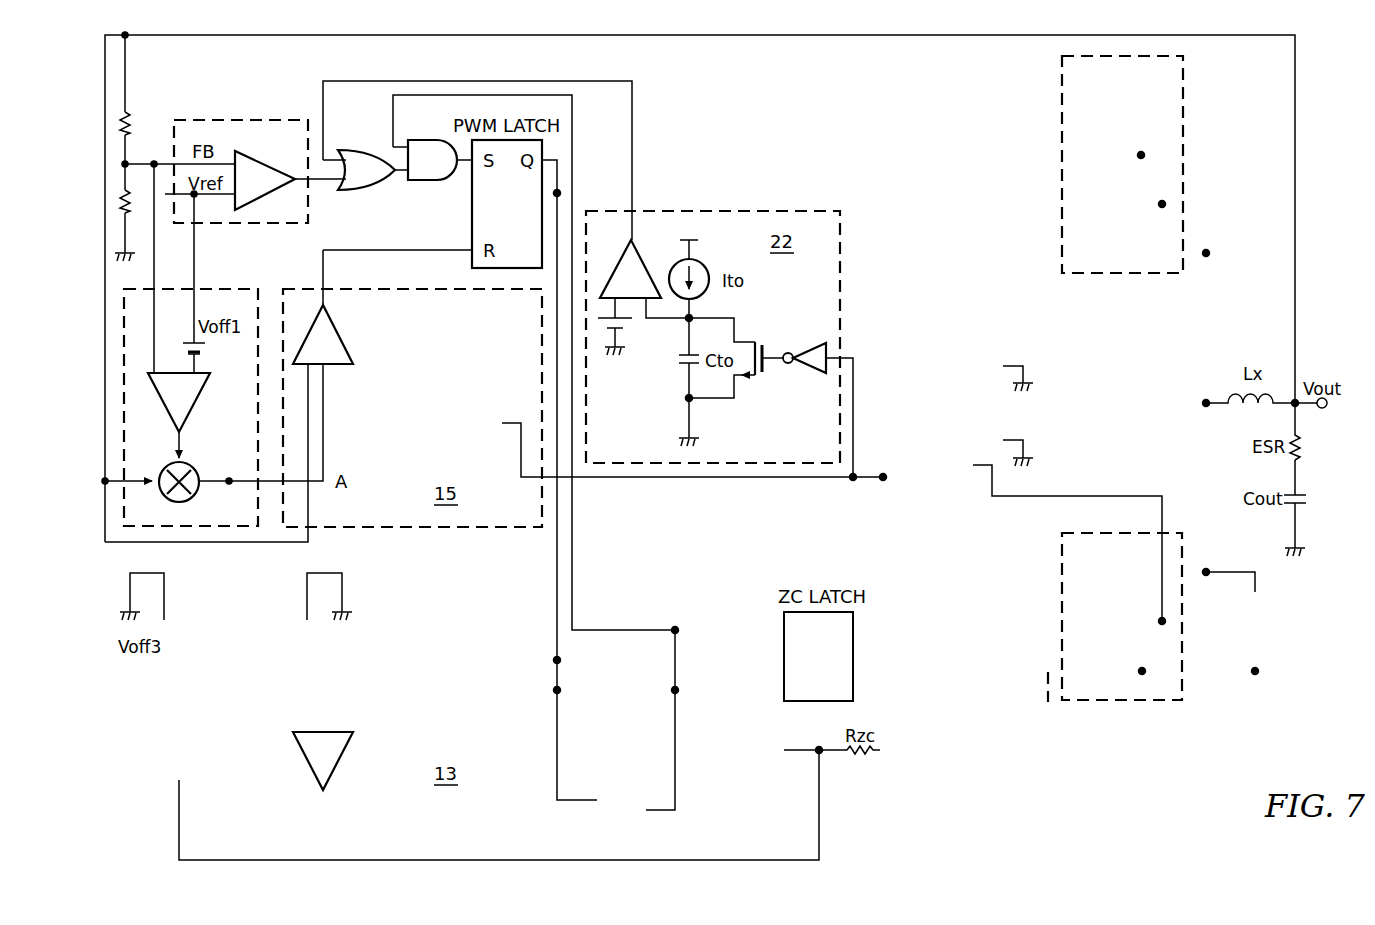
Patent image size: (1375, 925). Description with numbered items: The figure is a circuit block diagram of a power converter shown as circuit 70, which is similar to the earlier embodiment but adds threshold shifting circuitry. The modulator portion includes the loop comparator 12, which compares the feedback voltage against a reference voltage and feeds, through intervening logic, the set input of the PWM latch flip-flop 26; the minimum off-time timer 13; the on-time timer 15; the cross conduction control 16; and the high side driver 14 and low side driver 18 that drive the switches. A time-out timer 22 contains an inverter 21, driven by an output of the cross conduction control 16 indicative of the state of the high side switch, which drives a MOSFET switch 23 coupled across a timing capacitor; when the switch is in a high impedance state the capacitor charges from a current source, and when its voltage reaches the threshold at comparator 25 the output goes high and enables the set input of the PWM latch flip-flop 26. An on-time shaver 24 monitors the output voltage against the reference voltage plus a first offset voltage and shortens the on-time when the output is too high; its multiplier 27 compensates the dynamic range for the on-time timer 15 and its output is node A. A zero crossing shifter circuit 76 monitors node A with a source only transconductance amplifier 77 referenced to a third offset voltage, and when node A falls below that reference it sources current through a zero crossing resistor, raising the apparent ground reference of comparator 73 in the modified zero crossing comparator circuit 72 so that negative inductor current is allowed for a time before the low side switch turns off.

The loop comparator 12 is at (230, 118).
The minimum off-time timer 13 is at (323, 761).
The high side driver 14 is at (1060, 117).
The on-time timer 15 is at (412, 408).
The cross conduction control 16 is at (948, 168).
The low side driver 18 is at (1160, 704).
The inverter 21 is at (812, 346).
The time-out timer 22 is at (719, 344).
The MOSFET switch 23 is at (772, 372).
The on-time shaver 24 is at (222, 287).
The comparator 25 is at (651, 268).
The PWM latch flip-flop 26 is at (472, 204).
The multiplier 27 is at (194, 467).
The circuit 70 is at (1214, 820).
The zero crossing comparator circuit 72 is at (1020, 797).
The comparator 73 is at (752, 782).
The zero crossing shifter circuit 76 is at (168, 808).
The source only transconductance amplifier 77 is at (162, 722).